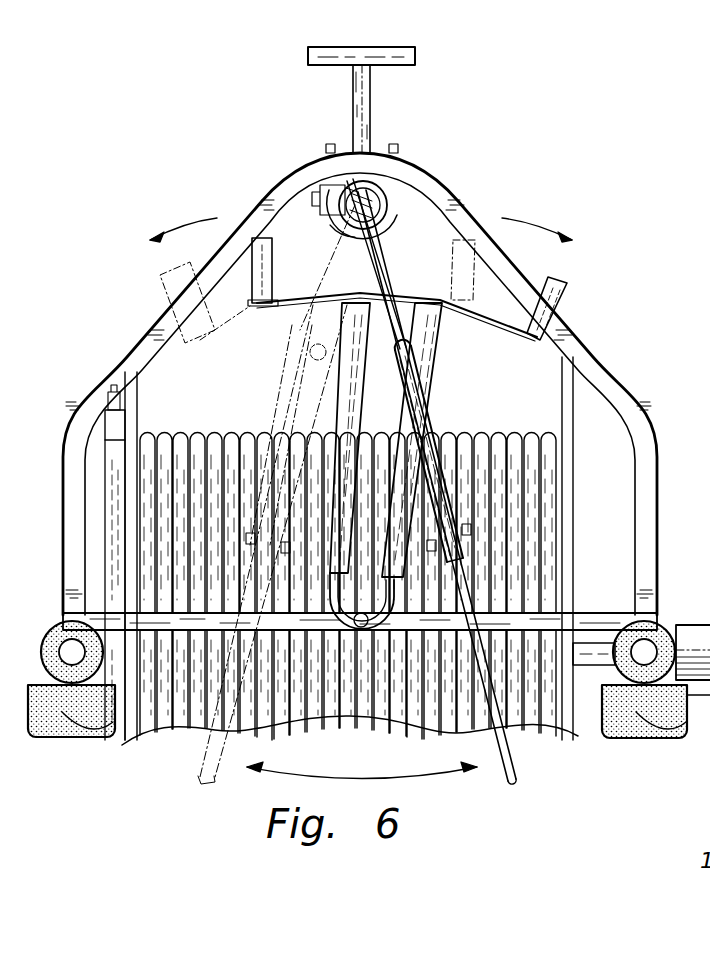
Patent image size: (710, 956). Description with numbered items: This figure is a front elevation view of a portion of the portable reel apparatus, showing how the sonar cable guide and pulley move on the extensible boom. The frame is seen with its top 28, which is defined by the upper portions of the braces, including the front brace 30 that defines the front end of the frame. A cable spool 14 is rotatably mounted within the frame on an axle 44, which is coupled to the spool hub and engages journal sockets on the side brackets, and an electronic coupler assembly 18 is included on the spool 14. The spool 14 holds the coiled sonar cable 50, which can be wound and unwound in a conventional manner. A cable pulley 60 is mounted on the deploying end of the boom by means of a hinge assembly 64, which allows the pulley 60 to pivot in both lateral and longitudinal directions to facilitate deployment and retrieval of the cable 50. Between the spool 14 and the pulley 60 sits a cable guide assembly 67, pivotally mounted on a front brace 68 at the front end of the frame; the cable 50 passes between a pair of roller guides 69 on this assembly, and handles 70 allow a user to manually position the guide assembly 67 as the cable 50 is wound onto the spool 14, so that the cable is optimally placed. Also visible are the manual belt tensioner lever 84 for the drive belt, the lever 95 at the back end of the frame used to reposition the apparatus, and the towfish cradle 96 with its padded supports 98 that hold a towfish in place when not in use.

The cable spool 14 is at (565, 492).
The electronic coupler assembly 18 is at (700, 648).
The top 28 is at (407, 158).
The front brace 30 is at (608, 352).
The axle 44 is at (593, 658).
The sonar cable 50 is at (403, 352).
The cable pulley 60 is at (483, 622).
The hinge assembly 64 is at (372, 178).
The cable guide assembly 67 is at (438, 367).
The front brace 68 is at (180, 627).
The roller guides 69 is at (362, 398).
The handles 70 is at (257, 288).
The manual belt tensioner lever 84 is at (113, 430).
The lever 95 is at (356, 134).
The towfish cradle 96 is at (98, 728).
The padded supports 98 is at (70, 675).